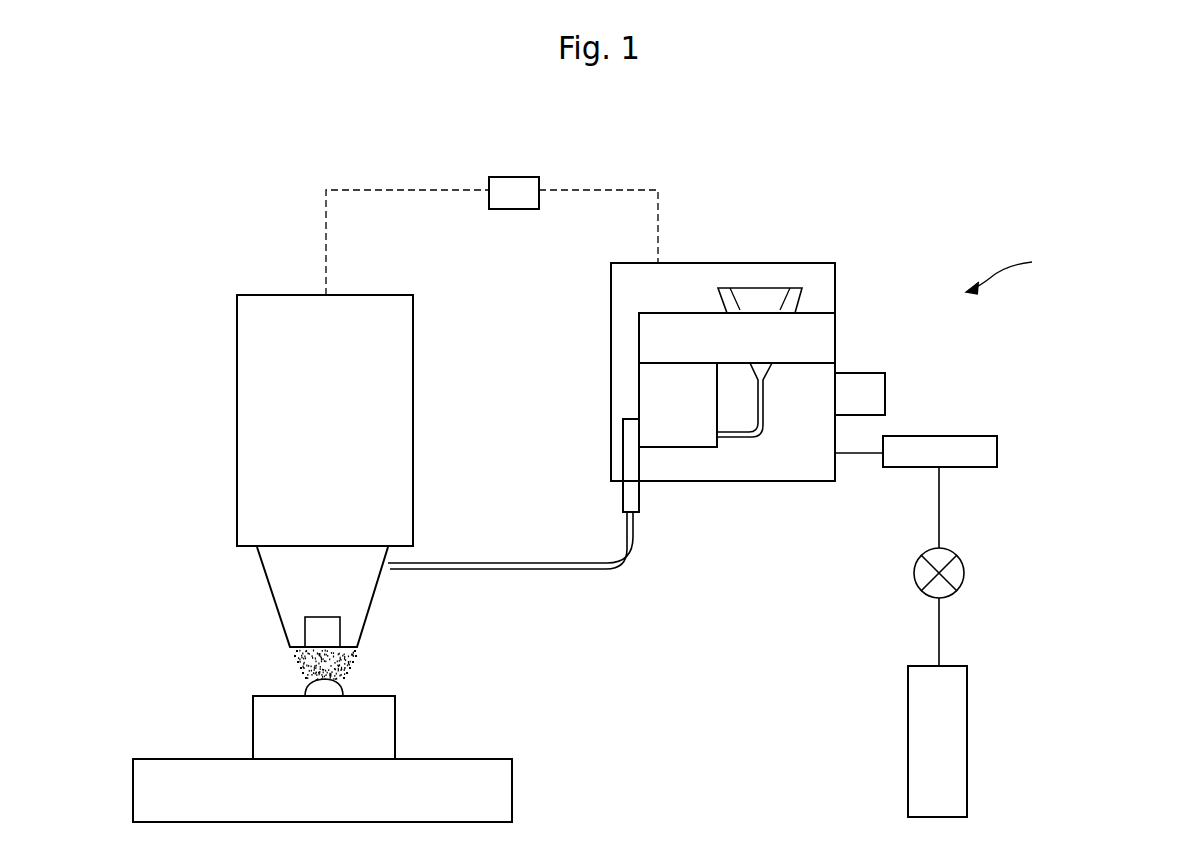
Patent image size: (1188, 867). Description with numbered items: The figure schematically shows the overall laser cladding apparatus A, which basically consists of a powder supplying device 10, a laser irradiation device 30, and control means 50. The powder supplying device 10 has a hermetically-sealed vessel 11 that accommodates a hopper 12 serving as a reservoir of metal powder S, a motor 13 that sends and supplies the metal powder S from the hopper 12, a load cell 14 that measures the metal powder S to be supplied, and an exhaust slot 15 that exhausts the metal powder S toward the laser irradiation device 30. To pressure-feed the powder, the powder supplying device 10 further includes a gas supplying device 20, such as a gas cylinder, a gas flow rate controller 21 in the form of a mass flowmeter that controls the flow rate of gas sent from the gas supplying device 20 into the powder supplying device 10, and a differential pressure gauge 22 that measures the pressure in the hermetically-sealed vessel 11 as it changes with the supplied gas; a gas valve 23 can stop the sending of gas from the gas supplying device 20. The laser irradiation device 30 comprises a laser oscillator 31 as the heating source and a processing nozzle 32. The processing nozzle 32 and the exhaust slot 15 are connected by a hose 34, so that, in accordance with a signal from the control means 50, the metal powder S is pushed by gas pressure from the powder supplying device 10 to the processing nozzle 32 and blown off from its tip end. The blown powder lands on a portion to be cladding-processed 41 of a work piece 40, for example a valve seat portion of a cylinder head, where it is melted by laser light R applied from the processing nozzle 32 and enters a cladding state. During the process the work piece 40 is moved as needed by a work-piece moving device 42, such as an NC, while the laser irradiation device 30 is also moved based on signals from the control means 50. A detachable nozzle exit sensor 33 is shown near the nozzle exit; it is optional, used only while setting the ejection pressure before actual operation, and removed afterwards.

The powder supplying device 10 is at (732, 359).
The hermetically-sealed vessel 11 is at (835, 293).
The hopper 12 is at (750, 300).
The motor 13 is at (660, 390).
The load cell 14 is at (660, 336).
The exhaust slot 15 is at (634, 495).
The gas supplying device 20 is at (1004, 740).
The gas flow rate controller 21 is at (1035, 452).
The differential pressure gauge 22 is at (935, 396).
The gas valve 23 is at (965, 574).
The laser irradiation device 30 is at (374, 439).
The laser oscillator 31 is at (237, 405).
The processing nozzle 32 is at (287, 581).
The detachable nozzle exit sensor 33 is at (320, 630).
The hose 34 is at (512, 560).
The work piece 40 is at (380, 733).
The portion to be cladding-processed 41 is at (313, 691).
The work-piece moving device 42 is at (492, 795).
The control means 50 is at (520, 177).
The laser light R is at (303, 666).
The metal powder S is at (350, 661).
The laser cladding apparatus A is at (1002, 266).